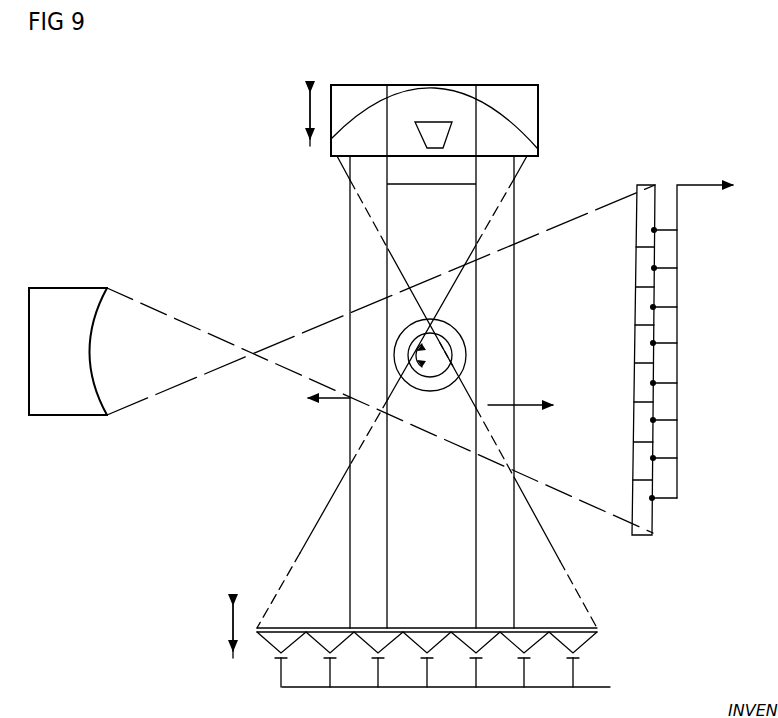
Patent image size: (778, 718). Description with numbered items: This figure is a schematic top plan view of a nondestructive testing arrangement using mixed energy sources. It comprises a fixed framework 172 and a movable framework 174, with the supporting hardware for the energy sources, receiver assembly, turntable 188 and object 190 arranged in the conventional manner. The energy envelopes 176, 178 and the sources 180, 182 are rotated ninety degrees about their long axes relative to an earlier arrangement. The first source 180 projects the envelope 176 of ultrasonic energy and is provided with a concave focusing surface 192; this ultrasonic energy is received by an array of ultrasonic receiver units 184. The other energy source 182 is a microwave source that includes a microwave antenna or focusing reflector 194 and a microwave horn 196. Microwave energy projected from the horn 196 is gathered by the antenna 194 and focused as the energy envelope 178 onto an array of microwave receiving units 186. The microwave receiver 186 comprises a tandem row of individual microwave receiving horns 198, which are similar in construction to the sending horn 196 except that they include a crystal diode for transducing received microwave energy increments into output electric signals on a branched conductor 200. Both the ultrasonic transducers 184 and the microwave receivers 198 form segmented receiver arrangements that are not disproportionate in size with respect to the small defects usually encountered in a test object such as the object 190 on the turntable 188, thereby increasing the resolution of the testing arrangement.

The fixed framework 172 is at (86, 385).
The movable framework 174 is at (513, 192).
The energy envelope 176 is at (152, 308).
The energy envelope 178 is at (505, 205).
The energy source 180 is at (55, 412).
The energy source 182 is at (367, 107).
The array of ultrasonic receiver units 184 is at (642, 537).
The array of microwave receiving units 186 is at (597, 628).
The turntable 188 is at (463, 345).
The object 190 is at (443, 338).
The concave focusing surface 192 is at (93, 343).
The microwave antenna or focusing reflector 194 is at (455, 90).
The microwave horn 196 is at (438, 125).
The microwave receiving horn 198 is at (407, 628).
The branched conductor 200 is at (410, 688).